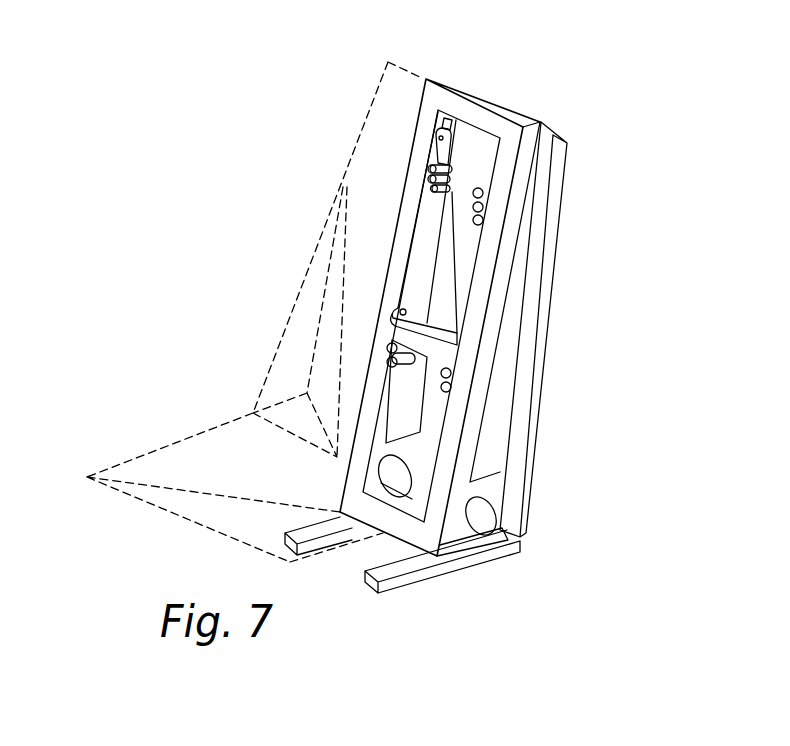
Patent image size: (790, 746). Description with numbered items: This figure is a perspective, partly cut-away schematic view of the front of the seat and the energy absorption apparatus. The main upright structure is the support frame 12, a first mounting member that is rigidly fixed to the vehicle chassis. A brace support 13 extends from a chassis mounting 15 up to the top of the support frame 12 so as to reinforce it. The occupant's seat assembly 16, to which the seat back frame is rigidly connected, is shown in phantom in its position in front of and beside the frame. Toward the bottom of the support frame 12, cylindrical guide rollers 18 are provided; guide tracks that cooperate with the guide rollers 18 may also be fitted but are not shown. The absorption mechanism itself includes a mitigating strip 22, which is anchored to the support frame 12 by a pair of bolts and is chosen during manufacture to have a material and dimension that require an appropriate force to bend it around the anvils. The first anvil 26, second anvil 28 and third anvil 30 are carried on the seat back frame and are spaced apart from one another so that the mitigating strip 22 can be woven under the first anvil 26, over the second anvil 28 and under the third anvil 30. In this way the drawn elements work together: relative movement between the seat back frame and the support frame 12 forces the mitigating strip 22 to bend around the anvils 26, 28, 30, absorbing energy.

The support frame 12 is at (393, 277).
The brace support 13 is at (513, 477).
The chassis mounting 15 is at (420, 568).
The seat assembly 16 is at (222, 515).
The guide rollers 18 is at (377, 353).
The mitigating strip 22 is at (418, 233).
The first anvil 26 is at (430, 168).
The second anvil 28 is at (427, 182).
The third anvil 30 is at (448, 122).